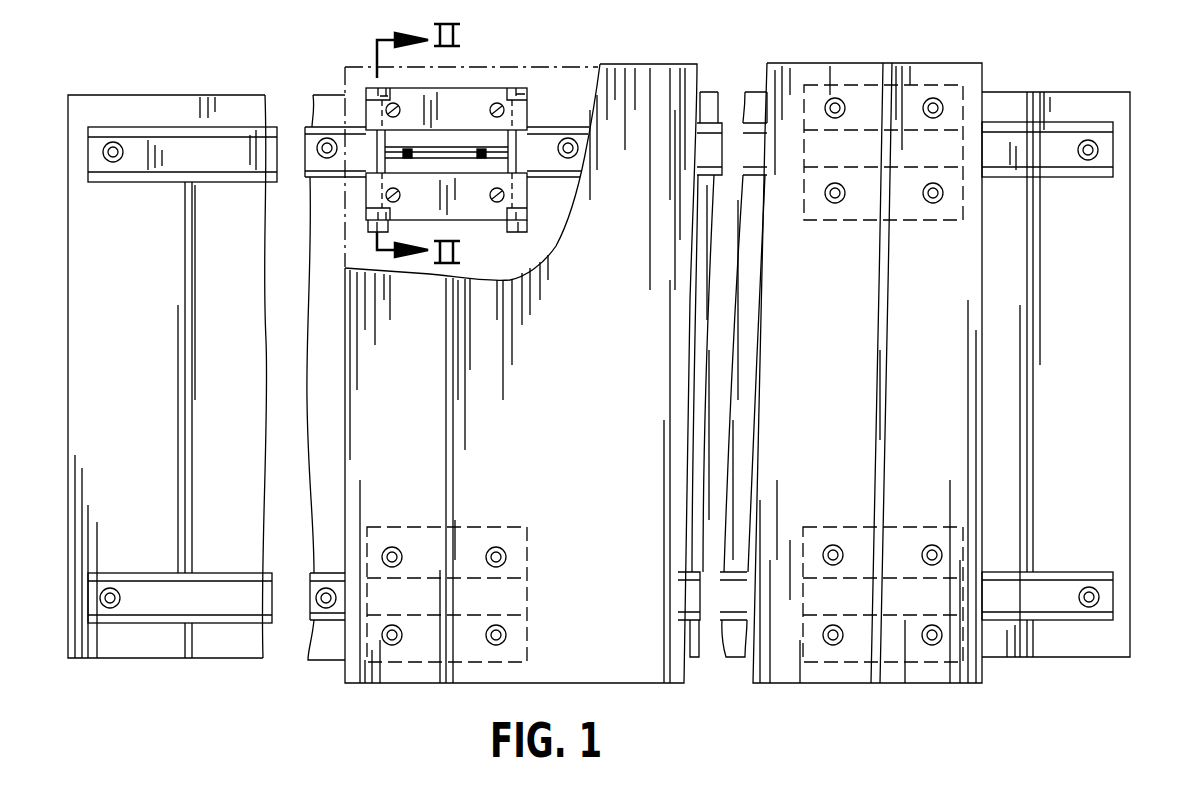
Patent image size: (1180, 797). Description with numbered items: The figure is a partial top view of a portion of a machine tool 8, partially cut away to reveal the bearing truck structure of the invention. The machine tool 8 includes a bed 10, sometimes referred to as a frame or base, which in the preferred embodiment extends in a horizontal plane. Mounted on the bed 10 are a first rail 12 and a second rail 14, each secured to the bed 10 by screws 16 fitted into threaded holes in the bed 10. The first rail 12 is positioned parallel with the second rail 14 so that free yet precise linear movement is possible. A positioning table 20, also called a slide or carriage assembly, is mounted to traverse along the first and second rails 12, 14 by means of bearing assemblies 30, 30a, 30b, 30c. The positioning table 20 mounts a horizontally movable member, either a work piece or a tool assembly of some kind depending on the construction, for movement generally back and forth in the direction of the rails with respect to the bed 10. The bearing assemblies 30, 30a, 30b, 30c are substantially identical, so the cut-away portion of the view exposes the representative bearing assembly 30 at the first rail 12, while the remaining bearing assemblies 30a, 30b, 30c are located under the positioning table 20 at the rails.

The machine tool 8 is at (199, 671).
The bed 10 is at (170, 370).
The first rail 12 is at (190, 150).
The second rail 14 is at (135, 606).
The screws 16 is at (113, 141).
The positioning table 20 is at (567, 366).
The bearing assembly 30 is at (470, 88).
The bearing assembly 30a is at (853, 85).
The bearing assembly 30b is at (418, 663).
The bearing assembly 30c is at (839, 663).